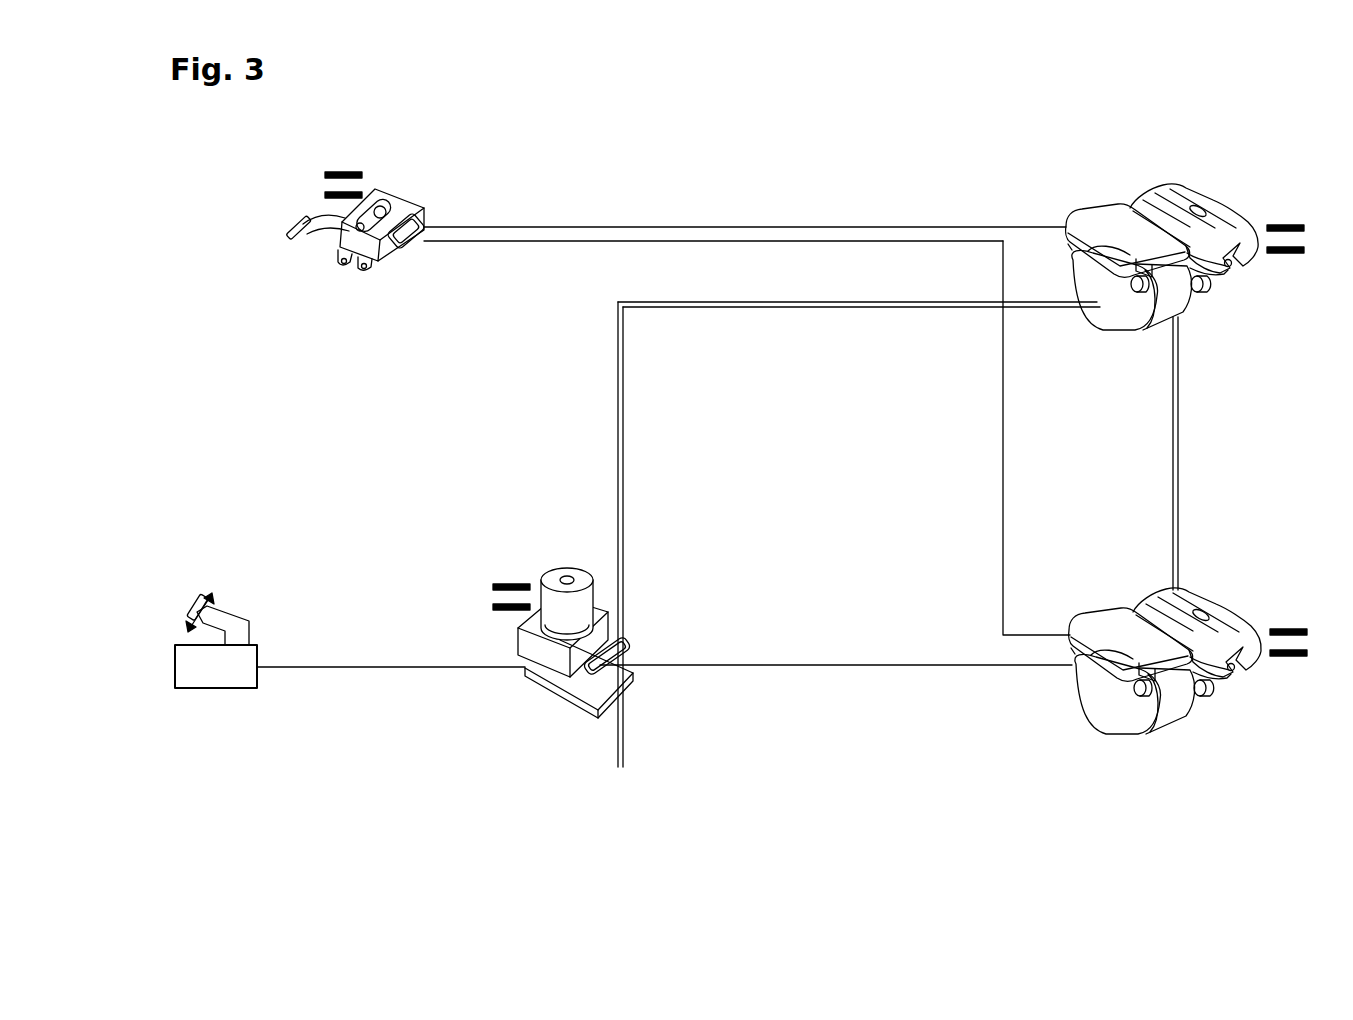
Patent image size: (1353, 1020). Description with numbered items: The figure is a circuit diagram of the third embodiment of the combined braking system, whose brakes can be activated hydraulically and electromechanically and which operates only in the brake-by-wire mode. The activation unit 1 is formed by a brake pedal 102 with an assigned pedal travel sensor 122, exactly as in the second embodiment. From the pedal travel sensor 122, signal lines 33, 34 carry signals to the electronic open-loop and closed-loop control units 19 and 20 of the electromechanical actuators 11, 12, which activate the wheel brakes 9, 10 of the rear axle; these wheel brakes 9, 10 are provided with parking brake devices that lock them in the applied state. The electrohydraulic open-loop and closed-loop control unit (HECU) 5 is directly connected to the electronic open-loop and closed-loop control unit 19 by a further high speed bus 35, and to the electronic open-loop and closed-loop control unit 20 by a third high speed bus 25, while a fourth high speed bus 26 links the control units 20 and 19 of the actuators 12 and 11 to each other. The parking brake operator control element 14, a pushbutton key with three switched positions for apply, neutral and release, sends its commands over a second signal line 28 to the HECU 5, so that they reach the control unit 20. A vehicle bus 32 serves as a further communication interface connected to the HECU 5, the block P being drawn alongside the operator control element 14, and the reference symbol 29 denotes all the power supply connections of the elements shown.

The activation unit 1 is at (328, 247).
The electrohydraulic open-loop and closed-loop control unit (HECU) 5 is at (578, 572).
The wheel brake 9 is at (1220, 205).
The wheel brake 10 is at (1225, 610).
The electromechanical actuator 11 is at (1105, 300).
The electromechanical actuator 12 is at (1108, 704).
The operator control element 14 is at (237, 628).
The electronic open-loop and closed-loop control unit 19 is at (1100, 220).
The electronic open-loop and closed-loop control unit 20 is at (1102, 625).
The third high speed bus 25 is at (858, 665).
The fourth high speed bus 26 is at (1180, 450).
The second signal line 28 is at (396, 665).
The power supply connections 29 is at (515, 583).
The vehicle bus 32 is at (628, 748).
The signal line 33 is at (848, 227).
The signal line 34 is at (1003, 446).
The further high speed bus 35 is at (862, 307).
The brake pedal 102 is at (300, 222).
The pedal travel sensor 122 is at (400, 190).
The pump P is at (216, 666).